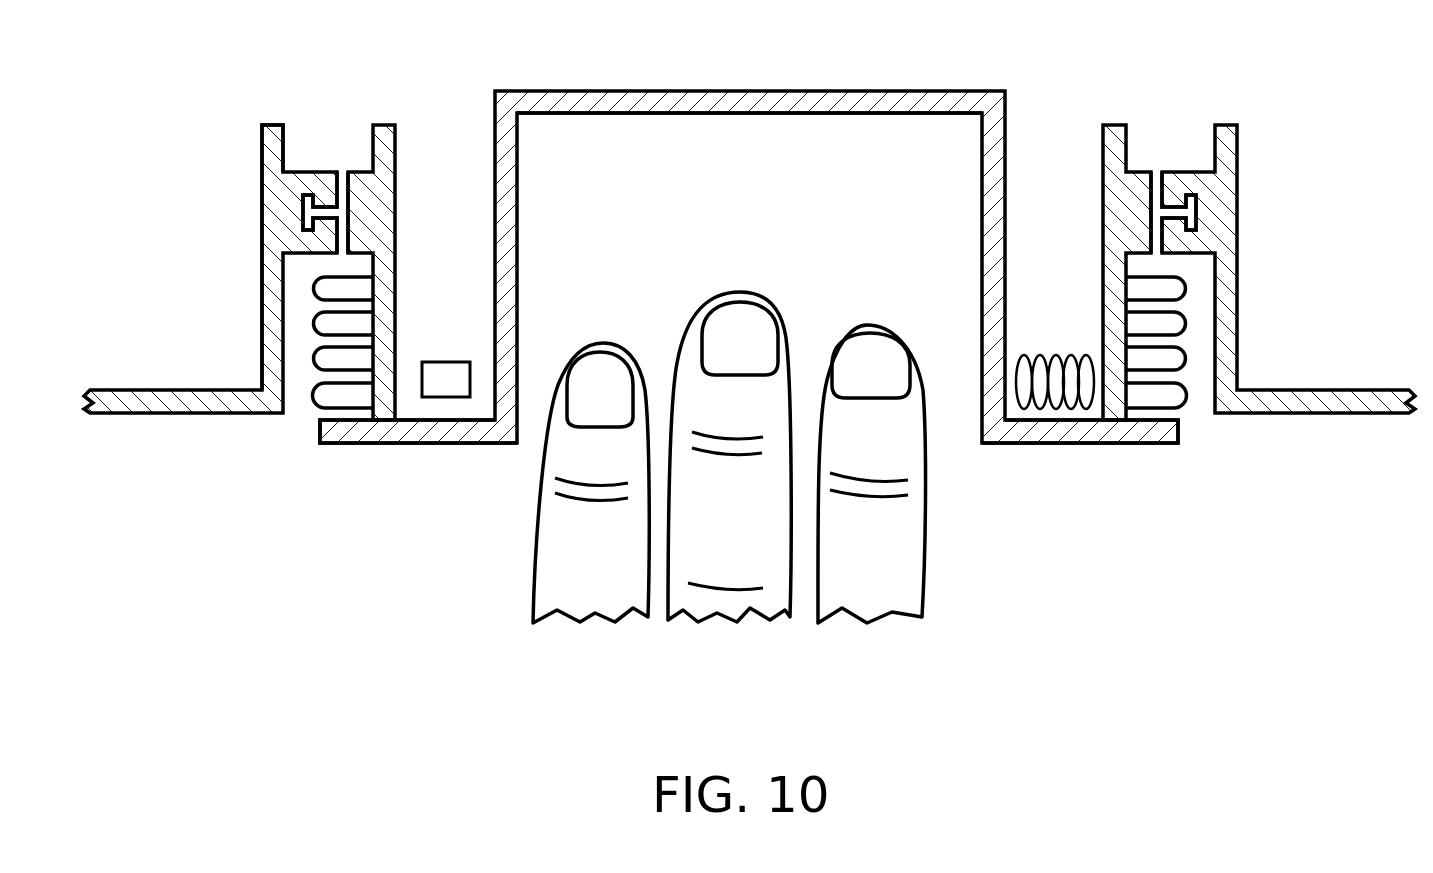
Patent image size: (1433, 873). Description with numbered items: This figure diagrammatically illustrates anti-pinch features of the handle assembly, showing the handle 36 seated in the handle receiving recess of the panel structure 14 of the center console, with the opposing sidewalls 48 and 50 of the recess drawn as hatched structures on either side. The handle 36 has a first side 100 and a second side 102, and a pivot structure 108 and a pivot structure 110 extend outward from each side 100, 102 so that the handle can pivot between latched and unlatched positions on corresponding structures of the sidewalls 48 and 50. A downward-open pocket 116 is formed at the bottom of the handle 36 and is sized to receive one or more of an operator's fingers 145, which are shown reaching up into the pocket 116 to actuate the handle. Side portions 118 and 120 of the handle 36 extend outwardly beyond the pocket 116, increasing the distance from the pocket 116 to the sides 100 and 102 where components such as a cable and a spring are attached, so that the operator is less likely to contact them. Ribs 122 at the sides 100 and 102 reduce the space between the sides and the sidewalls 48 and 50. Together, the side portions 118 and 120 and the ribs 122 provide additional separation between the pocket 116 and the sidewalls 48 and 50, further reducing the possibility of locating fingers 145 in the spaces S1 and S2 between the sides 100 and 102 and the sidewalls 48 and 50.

The panel structure 14 is at (167, 390).
The handle 36 is at (603, 91).
The sidewall 48 is at (283, 305).
The sidewall 50 is at (1215, 340).
The side 100 is at (374, 307).
The side 102 is at (1125, 307).
The pivot structure 108 is at (357, 171).
The pivot structure 110 is at (1143, 172).
The pocket 116 is at (805, 145).
The side portion 118 is at (427, 443).
The side portion 120 is at (1070, 443).
The ribs 122 is at (365, 358).
The finger 145 is at (913, 570).
The space S1 is at (292, 430).
The space S2 is at (1207, 430).